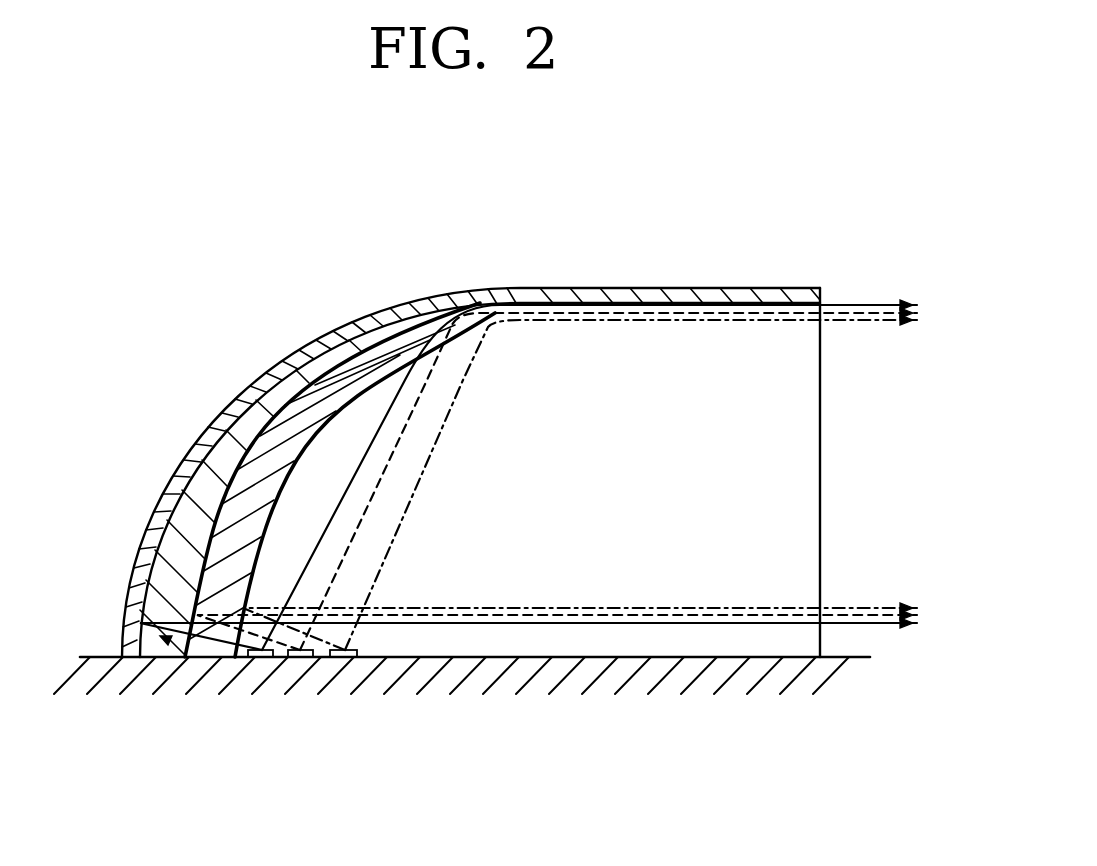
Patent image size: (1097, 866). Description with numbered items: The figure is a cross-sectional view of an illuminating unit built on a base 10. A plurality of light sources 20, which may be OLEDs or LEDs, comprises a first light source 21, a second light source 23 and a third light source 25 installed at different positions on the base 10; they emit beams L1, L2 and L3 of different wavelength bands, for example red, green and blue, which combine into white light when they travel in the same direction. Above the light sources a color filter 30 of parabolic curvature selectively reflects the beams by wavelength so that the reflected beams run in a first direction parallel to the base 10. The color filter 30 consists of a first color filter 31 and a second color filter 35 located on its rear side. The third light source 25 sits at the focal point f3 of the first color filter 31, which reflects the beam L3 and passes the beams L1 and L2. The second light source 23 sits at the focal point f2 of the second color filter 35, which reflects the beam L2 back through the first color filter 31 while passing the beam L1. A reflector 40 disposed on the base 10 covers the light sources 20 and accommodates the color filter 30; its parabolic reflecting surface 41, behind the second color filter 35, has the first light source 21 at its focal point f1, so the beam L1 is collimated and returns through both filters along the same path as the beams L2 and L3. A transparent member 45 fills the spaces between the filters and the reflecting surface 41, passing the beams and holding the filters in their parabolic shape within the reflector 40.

The base 10 is at (742, 680).
The light sources 20 is at (322, 728).
The first light source 21 is at (258, 660).
The second light source 23 is at (318, 660).
The third light source 25 is at (358, 660).
The color filter 30 is at (128, 662).
The first color filter 31 is at (208, 662).
The second color filter 35 is at (162, 662).
The reflector 40 is at (442, 505).
The reflecting surface 41 is at (290, 378).
The transparent member 45 is at (368, 342).
The focal point f1 is at (266, 660).
The focal point f2 is at (303, 660).
The focal point f3 is at (358, 660).
The beam L1 is at (405, 392).
The beam L2 is at (408, 423).
The beam L3 is at (428, 462).